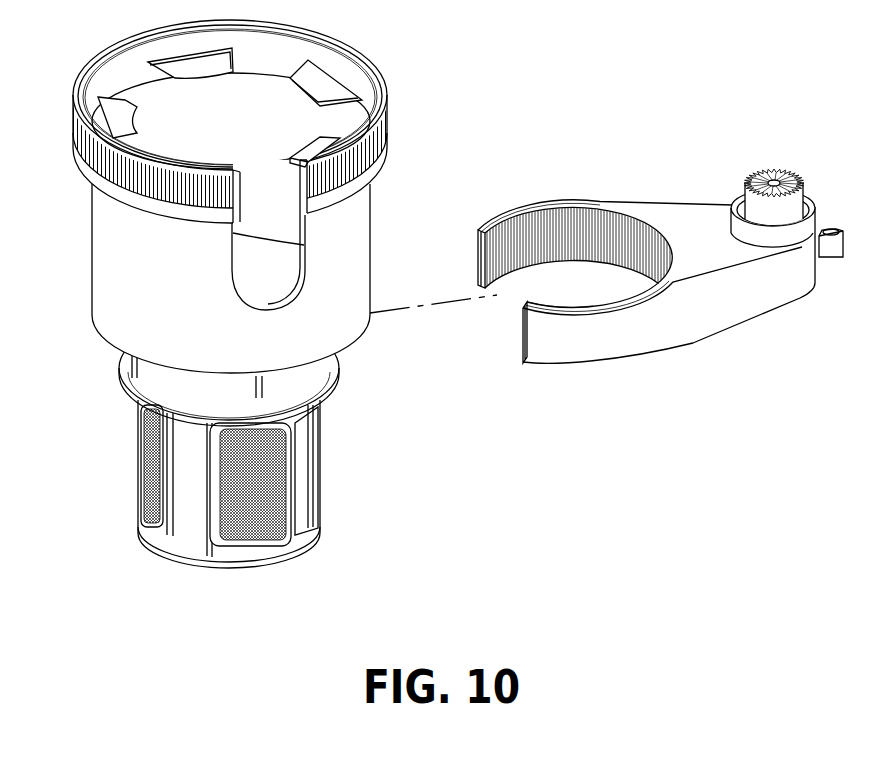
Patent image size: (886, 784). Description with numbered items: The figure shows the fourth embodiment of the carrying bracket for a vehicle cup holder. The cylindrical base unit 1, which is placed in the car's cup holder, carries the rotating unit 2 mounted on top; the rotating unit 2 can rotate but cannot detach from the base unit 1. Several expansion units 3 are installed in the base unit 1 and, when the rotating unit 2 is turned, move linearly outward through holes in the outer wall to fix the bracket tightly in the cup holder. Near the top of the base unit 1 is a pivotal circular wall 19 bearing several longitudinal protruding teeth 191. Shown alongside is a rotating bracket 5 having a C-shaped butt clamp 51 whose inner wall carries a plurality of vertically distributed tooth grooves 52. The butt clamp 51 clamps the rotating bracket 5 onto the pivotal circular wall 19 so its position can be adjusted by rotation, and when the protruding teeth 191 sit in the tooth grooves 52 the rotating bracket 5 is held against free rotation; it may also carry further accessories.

The base unit 1 is at (150, 535).
The rotating unit 2 is at (113, 260).
The expansion unit 3 is at (287, 537).
The pivotal circular wall 19 is at (318, 371).
The protruding teeth 191 is at (258, 400).
The rotating bracket 5 is at (735, 308).
The butt clamp 51 is at (587, 348).
The tooth grooves 52 is at (562, 230).